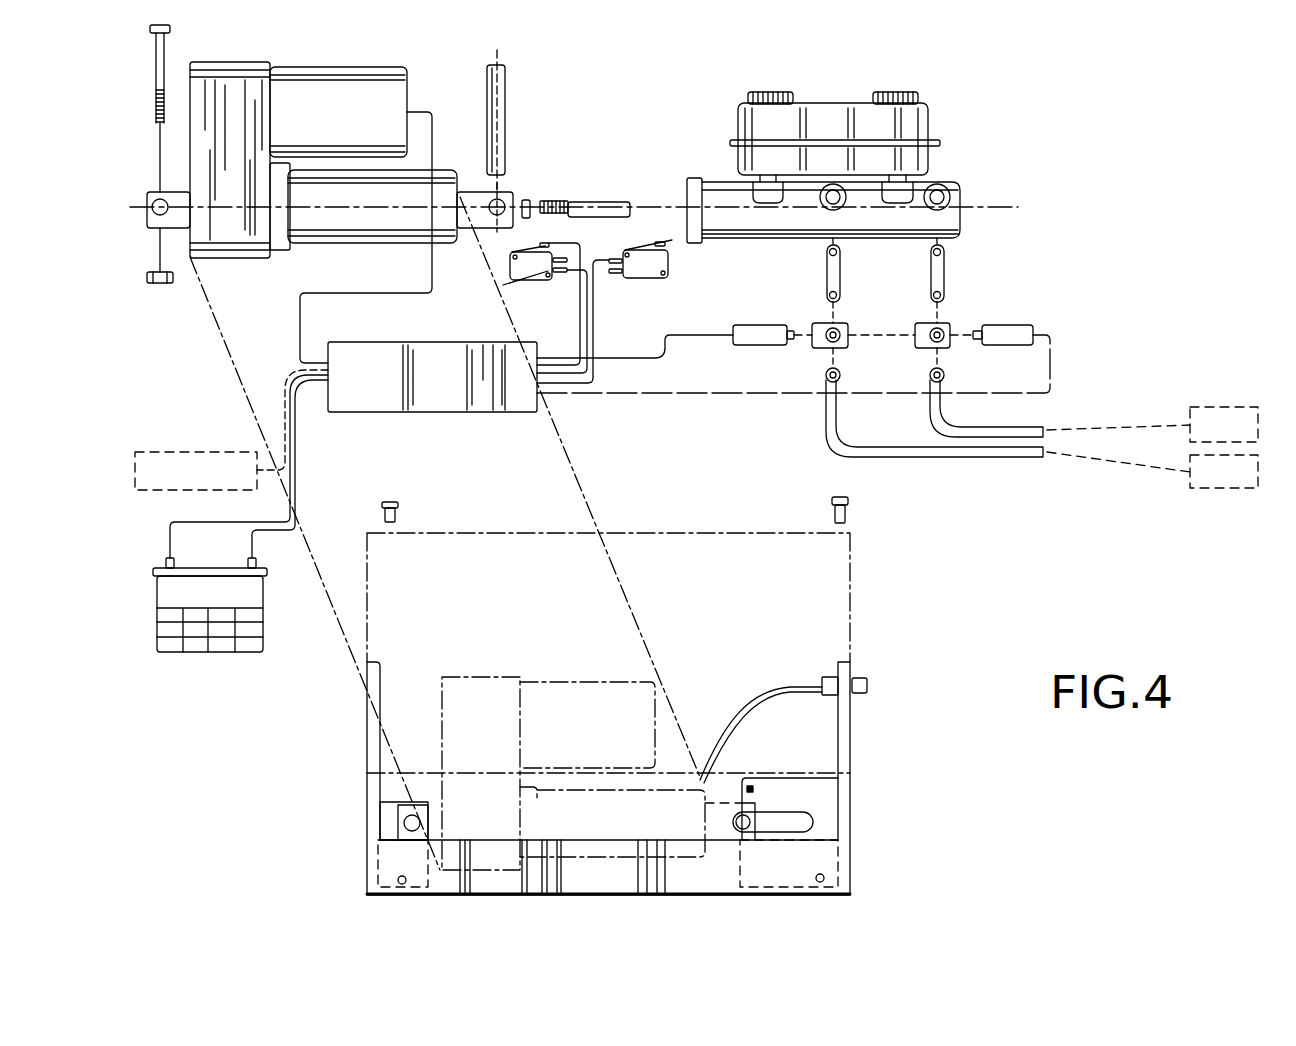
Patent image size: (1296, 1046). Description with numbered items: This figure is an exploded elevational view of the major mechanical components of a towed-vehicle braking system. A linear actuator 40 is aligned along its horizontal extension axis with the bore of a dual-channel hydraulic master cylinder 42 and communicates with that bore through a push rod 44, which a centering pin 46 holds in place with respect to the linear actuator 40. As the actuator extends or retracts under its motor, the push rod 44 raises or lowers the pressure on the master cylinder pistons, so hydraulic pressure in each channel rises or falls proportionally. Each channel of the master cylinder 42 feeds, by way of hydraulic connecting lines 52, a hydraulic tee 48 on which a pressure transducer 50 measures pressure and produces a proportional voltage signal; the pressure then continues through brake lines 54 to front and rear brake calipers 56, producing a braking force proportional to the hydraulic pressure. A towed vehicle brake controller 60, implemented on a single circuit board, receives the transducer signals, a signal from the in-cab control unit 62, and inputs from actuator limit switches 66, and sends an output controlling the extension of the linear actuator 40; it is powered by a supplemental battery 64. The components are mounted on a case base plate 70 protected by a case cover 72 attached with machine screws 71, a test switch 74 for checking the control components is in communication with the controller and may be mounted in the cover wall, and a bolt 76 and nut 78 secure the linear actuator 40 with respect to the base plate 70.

The linear actuator 40 is at (295, 65).
The dual-channel hydraulic master cylinder 42 is at (722, 183).
The push rod 44 is at (578, 204).
The centering pin 46 is at (506, 107).
The hydraulic tees 48 is at (917, 323).
The pressure transducers 50 is at (780, 331).
The hydraulic connecting lines 52 is at (898, 276).
The brake lines 54 is at (972, 432).
The brake calipers 56 is at (1252, 407).
The towed vehicle brake controller 60 is at (386, 352).
The in-cab control unit 62 is at (171, 450).
The battery 64 is at (172, 587).
The actuator limit switches 66 is at (645, 278).
The case base plate 70 is at (367, 745).
The machine screws 71 is at (398, 512).
The case cover 72 is at (507, 533).
The test switch 74 is at (862, 682).
The bolt 76 is at (163, 53).
The nut 78 is at (162, 284).